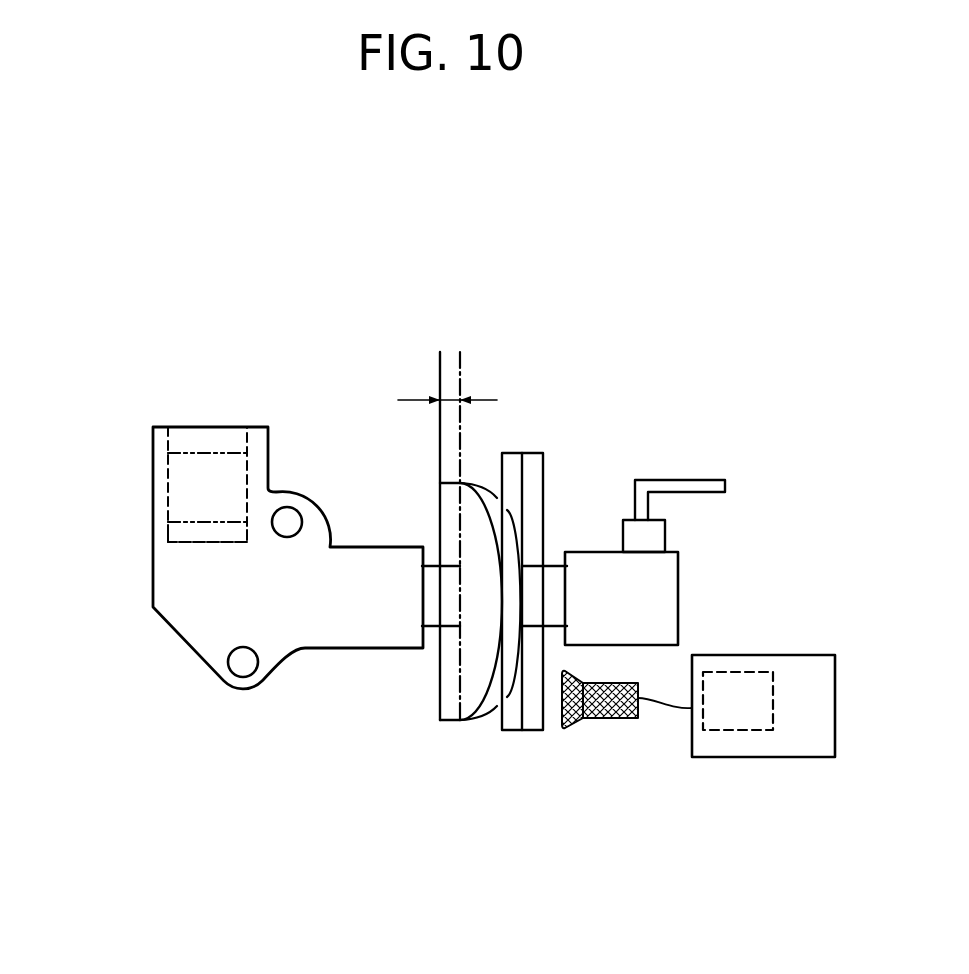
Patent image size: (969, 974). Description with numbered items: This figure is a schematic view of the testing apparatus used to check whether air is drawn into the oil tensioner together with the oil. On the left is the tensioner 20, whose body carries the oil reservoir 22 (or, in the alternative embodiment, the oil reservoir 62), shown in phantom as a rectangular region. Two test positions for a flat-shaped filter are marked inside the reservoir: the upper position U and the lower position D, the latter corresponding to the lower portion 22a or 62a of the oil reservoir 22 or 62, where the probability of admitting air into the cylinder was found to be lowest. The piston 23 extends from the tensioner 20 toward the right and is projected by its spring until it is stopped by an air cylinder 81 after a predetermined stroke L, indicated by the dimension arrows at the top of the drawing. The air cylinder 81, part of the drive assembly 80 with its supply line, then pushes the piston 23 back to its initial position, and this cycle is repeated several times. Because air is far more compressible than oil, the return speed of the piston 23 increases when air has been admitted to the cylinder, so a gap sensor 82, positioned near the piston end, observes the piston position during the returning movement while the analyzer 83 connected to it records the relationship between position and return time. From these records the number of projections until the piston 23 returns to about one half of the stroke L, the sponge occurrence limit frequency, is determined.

The oil tensioner 20 is at (184, 642).
The oil reservoir 22 is at (203, 424).
The oil reservoir 62 is at (172, 445).
The lower portion of oil reservoir 22a is at (143, 559).
The lower portion of oil reservoir 62a is at (164, 542).
The upper position U is at (223, 453).
The lower position D is at (227, 520).
The piston 23 is at (437, 537).
The stroke L is at (447, 382).
The drive unit 80 is at (594, 532).
The air cylinder 81 is at (668, 602).
The gap sensor 82 is at (557, 716).
The analyzer 83 is at (733, 732).